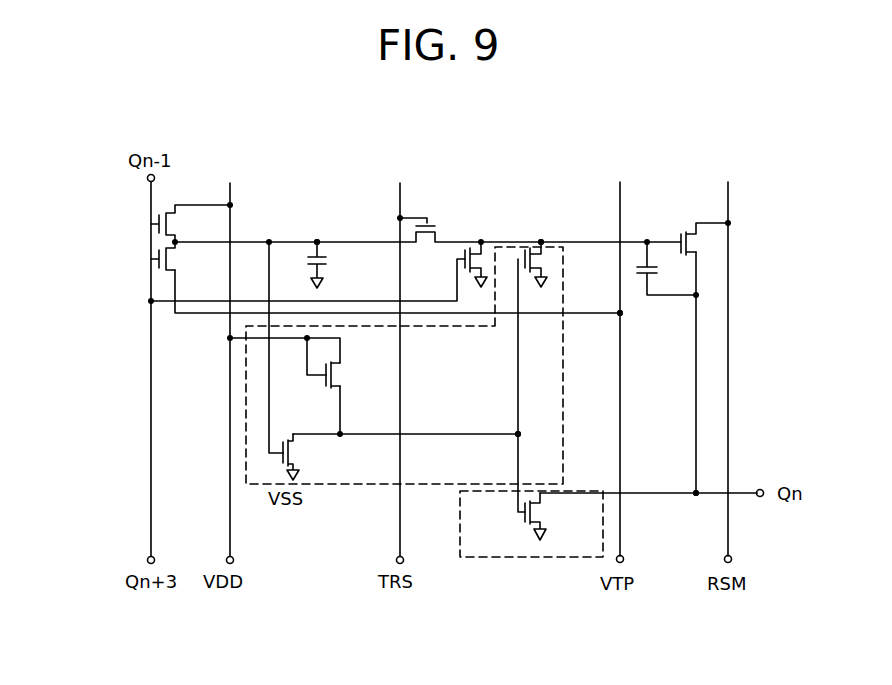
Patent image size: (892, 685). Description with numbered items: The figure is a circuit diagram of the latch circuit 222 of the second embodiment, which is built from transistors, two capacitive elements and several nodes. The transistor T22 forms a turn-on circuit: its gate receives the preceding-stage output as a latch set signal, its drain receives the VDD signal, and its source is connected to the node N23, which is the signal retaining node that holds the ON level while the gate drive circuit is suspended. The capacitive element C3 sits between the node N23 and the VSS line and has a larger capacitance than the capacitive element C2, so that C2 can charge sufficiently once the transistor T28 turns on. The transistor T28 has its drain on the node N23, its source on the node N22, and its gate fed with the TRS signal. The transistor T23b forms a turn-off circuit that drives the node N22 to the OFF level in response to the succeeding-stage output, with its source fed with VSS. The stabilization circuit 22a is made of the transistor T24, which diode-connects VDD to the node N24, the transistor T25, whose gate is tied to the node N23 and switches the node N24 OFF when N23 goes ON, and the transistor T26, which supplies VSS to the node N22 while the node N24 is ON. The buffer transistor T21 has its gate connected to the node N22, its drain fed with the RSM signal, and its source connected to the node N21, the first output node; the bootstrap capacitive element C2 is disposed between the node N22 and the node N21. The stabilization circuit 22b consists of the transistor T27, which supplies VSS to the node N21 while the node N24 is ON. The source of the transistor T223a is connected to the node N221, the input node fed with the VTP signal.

The latch circuit 222 is at (223, 120).
The transistor T22 is at (155, 238).
The transistor T223a is at (151, 255).
The node N23 is at (316, 239).
The capacitive element C3 is at (336, 263).
The transistor T28 is at (437, 223).
The node N22 is at (538, 239).
The transistor T23b is at (461, 278).
The transistor T26 is at (524, 278).
The stabilization circuit 22a is at (585, 279).
The transistor T21 is at (680, 227).
The capacitive element C2 is at (647, 278).
The node N221 is at (605, 318).
The transistor T24 is at (344, 378).
The node N24 is at (503, 427).
The transistor T25 is at (298, 447).
The transistor T27 is at (517, 519).
The stabilization circuit 22b is at (567, 491).
The node N21 is at (681, 489).